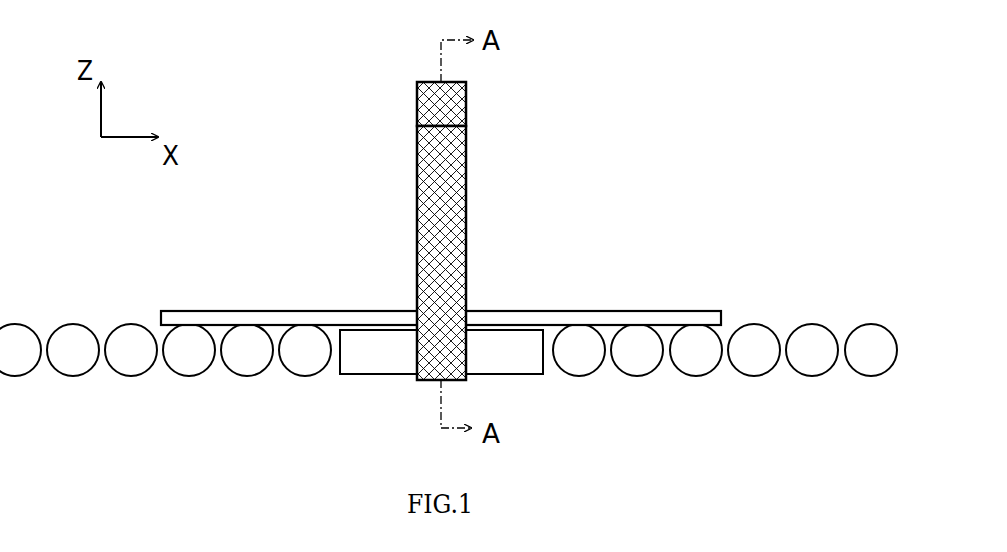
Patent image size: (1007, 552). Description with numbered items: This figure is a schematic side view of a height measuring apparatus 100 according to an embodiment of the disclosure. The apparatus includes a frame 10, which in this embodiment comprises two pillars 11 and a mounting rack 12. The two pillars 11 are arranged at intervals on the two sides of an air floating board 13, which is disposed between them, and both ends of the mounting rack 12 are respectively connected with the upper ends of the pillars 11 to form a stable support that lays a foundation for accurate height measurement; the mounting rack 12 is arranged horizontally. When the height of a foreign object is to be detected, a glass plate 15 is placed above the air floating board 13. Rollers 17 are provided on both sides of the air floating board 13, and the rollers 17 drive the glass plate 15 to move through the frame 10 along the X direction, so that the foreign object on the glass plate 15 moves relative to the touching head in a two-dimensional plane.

The height measuring apparatus 100 is at (612, 75).
The frame 10 is at (512, 231).
The pillars 11 is at (456, 156).
The mounting rack 12 is at (454, 107).
The air floating board 13 is at (513, 360).
The glass plate 15 is at (629, 310).
The rollers 17 is at (698, 367).